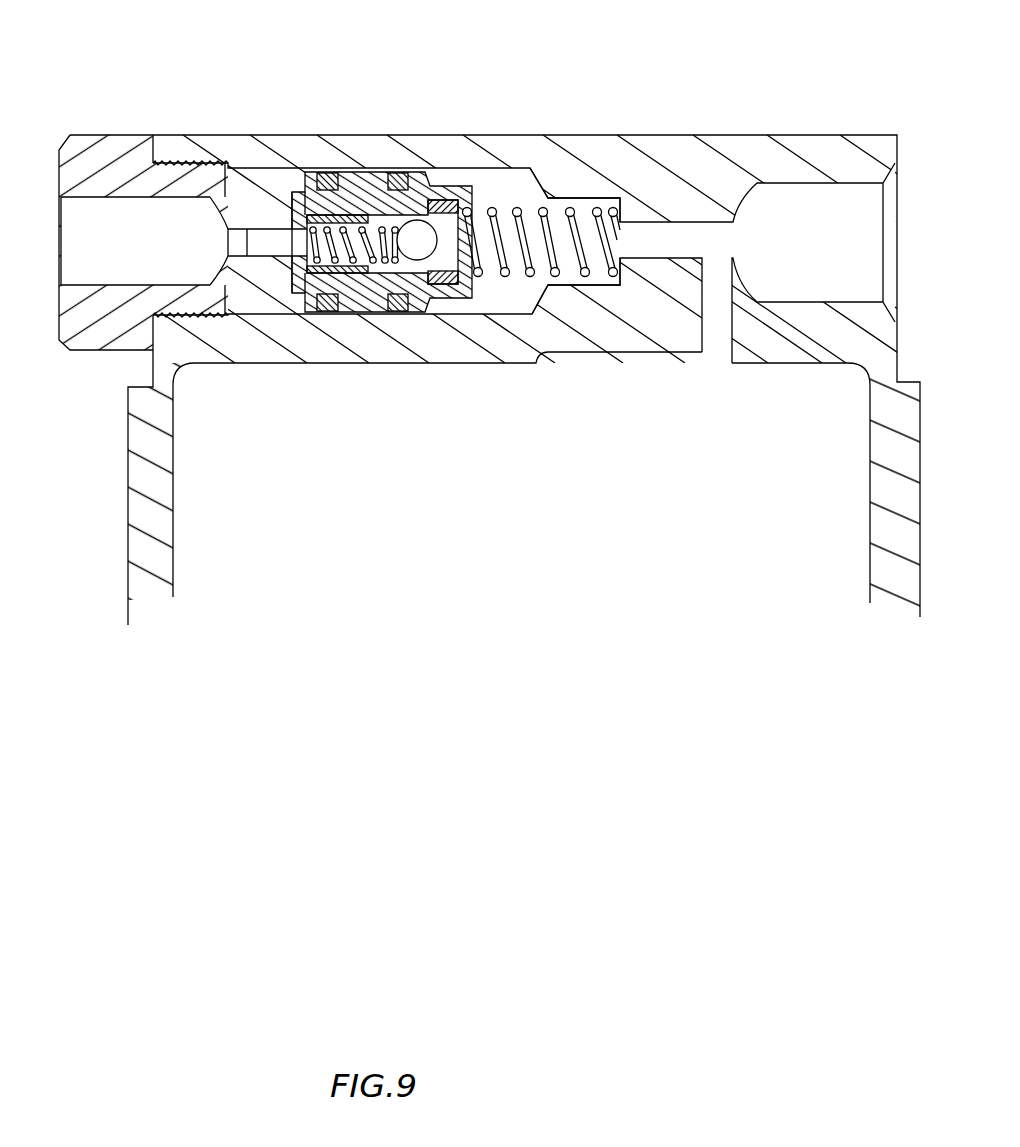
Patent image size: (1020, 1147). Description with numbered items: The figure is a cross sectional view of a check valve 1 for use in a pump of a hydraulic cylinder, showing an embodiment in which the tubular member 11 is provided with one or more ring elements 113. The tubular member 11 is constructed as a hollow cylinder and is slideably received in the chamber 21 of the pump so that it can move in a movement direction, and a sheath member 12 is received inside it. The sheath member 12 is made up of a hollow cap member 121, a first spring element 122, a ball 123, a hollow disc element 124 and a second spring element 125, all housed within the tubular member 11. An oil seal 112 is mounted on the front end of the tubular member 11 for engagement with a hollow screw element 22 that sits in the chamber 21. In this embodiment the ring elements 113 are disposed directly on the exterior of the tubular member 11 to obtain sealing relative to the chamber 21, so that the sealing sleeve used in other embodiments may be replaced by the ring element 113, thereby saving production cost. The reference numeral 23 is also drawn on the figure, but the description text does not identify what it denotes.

The check valve 1 is at (426, 277).
The tubular member 11 is at (339, 241).
The sheath member 12 is at (454, 280).
The chamber 21 is at (508, 182).
The hollow screw element 22 is at (62, 335).
The bore 23 is at (356, 150).
The oil seal 112 is at (262, 288).
The ring element 113 is at (325, 172).
The hollow cap member 121 is at (312, 308).
The first spring element 122 is at (356, 272).
The ball 123 is at (417, 252).
The hollow disc element 124 is at (452, 275).
The second spring element 125 is at (556, 272).